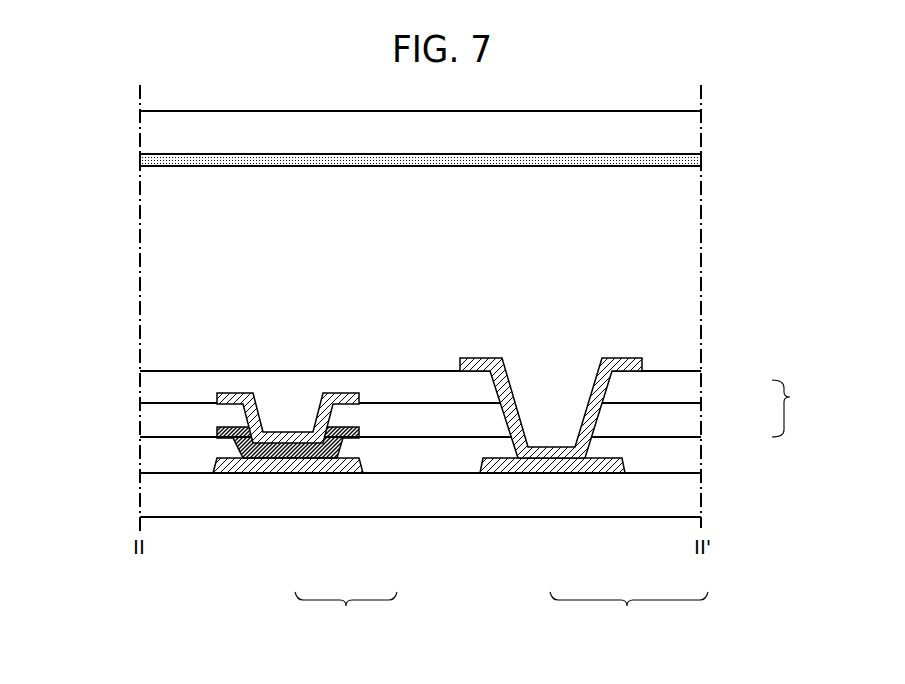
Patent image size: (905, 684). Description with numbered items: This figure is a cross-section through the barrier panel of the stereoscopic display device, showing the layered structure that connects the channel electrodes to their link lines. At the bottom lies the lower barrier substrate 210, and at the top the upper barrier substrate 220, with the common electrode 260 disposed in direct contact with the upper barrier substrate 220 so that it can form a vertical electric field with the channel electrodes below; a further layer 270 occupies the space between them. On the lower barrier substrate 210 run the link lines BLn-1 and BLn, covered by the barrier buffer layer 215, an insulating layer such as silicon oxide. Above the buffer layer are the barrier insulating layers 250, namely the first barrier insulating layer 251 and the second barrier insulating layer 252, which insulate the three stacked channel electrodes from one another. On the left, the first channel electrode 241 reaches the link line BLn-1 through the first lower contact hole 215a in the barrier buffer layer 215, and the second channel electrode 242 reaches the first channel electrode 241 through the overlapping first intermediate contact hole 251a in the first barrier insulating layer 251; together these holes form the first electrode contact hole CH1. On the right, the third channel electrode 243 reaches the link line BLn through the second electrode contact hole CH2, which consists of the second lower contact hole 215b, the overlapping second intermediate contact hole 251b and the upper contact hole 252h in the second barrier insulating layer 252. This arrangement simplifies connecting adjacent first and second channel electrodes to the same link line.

The upper barrier substrate 220 is at (694, 121).
The common electrode 260 is at (694, 158).
The filling layer 270 is at (694, 270).
The third channel electrode 243 is at (642, 360).
The second barrier insulating layer 252 is at (694, 390).
The first barrier insulating layer 251 is at (694, 423).
The barrier insulating layers 250 is at (799, 408).
The barrier buffer layer 215 is at (694, 457).
The lower barrier substrate 210 is at (694, 490).
The second channel electrode 242 is at (216, 396).
The first channel electrode 241 is at (216, 428).
The first lower contact hole 215a is at (345, 448).
The first intermediate contact hole 251a is at (333, 412).
The second lower contact hole 215b is at (592, 445).
The second intermediate contact hole 251b is at (600, 418).
The upper contact hole 252h is at (612, 388).
The link line BLn-1 is at (239, 474).
The link line BLn is at (503, 465).
The first electrode contact hole CH1 is at (346, 614).
The second electrode contact hole CH2 is at (629, 614).